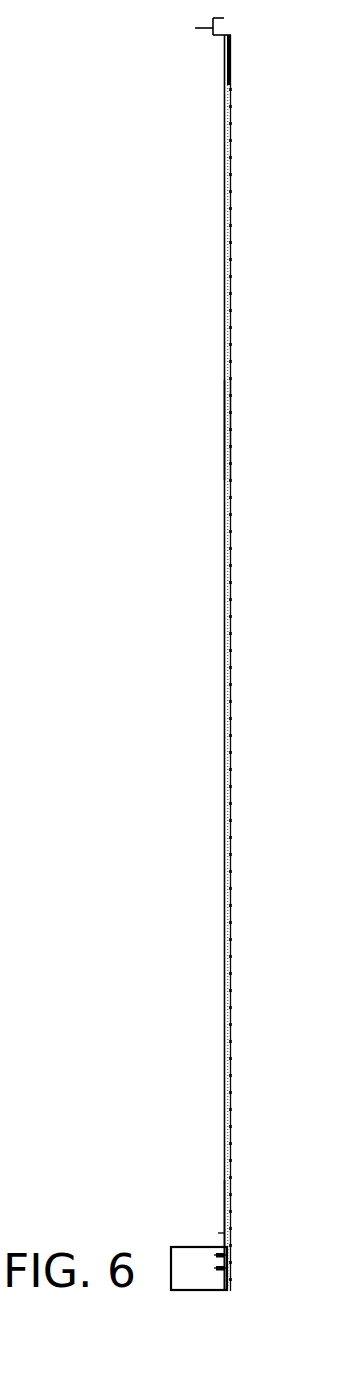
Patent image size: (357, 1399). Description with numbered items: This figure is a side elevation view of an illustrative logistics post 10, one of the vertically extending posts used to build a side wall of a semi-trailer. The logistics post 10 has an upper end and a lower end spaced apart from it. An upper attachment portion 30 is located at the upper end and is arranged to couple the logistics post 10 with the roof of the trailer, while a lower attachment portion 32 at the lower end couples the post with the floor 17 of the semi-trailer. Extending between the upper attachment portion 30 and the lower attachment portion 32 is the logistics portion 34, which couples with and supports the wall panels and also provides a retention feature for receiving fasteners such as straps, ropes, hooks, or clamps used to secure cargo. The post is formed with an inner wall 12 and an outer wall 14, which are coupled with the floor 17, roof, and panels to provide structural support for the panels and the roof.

The logistics post 10 is at (195, 654).
The inner wall 12 is at (207, 440).
The outer wall 14 is at (236, 440).
The floor 17 is at (190, 1260).
The upper attachment portion 30 is at (232, 112).
The lower attachment portion 32 is at (232, 1182).
The logistics portion 34 is at (224, 607).